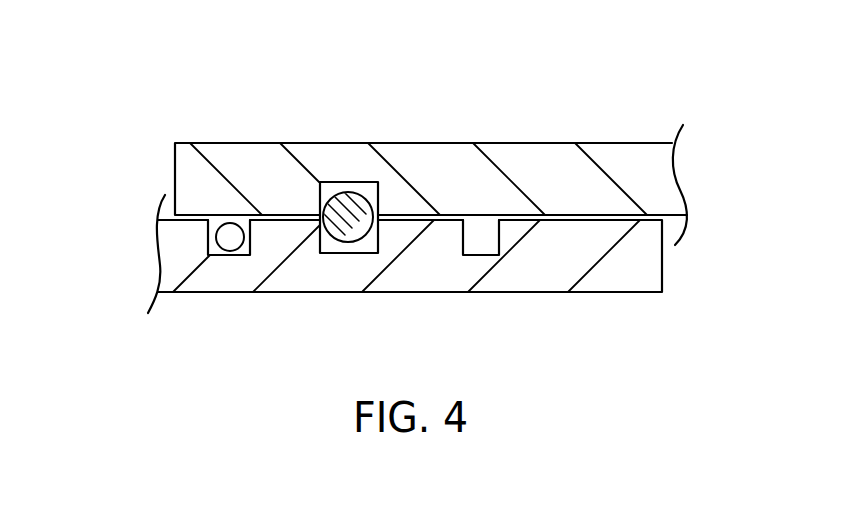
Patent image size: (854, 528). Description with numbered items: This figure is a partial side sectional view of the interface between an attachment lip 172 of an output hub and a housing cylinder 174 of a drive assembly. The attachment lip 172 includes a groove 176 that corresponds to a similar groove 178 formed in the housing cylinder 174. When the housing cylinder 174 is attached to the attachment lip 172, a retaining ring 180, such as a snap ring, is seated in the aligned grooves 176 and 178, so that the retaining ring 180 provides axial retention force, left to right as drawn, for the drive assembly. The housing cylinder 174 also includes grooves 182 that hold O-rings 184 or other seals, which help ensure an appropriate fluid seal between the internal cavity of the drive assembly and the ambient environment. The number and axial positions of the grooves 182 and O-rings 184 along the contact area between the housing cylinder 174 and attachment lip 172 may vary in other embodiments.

The attachment lip 172 is at (612, 142).
The housing cylinder 174 is at (603, 293).
The groove 176 is at (332, 181).
The groove 178 is at (335, 254).
The retaining ring 180 is at (352, 195).
The grooves 182 is at (217, 257).
The O-rings 184 is at (216, 238).